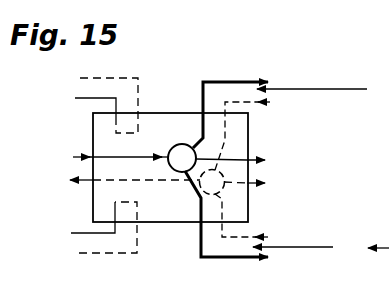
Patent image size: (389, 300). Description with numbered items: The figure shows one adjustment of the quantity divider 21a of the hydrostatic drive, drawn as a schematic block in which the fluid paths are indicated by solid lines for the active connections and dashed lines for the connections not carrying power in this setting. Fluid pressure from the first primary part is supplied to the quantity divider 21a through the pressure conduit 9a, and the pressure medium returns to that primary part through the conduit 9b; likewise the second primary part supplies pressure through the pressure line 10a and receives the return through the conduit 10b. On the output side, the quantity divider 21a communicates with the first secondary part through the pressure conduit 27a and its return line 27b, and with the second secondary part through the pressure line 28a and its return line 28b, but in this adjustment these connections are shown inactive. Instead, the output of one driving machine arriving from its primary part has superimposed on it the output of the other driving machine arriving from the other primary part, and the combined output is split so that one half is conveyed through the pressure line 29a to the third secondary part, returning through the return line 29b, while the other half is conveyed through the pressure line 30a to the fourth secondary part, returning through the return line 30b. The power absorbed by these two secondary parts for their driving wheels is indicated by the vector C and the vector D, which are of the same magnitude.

The quantity divider 21a is at (160, 127).
The pressure conduit 27a is at (77, 102).
The return line 27b is at (90, 95).
The pressure line 28a is at (76, 221).
The return line 28b is at (86, 232).
The pressure conduit 9a is at (108, 158).
The conduit 9b is at (122, 181).
The pressure line 10a is at (254, 160).
The conduit 10b is at (269, 183).
The pressure line 29a is at (240, 80).
The return line 29b is at (262, 104).
The pressure line 30a is at (245, 259).
The return line 30b is at (257, 237).
The vector C is at (325, 89).
The vector D is at (318, 247).